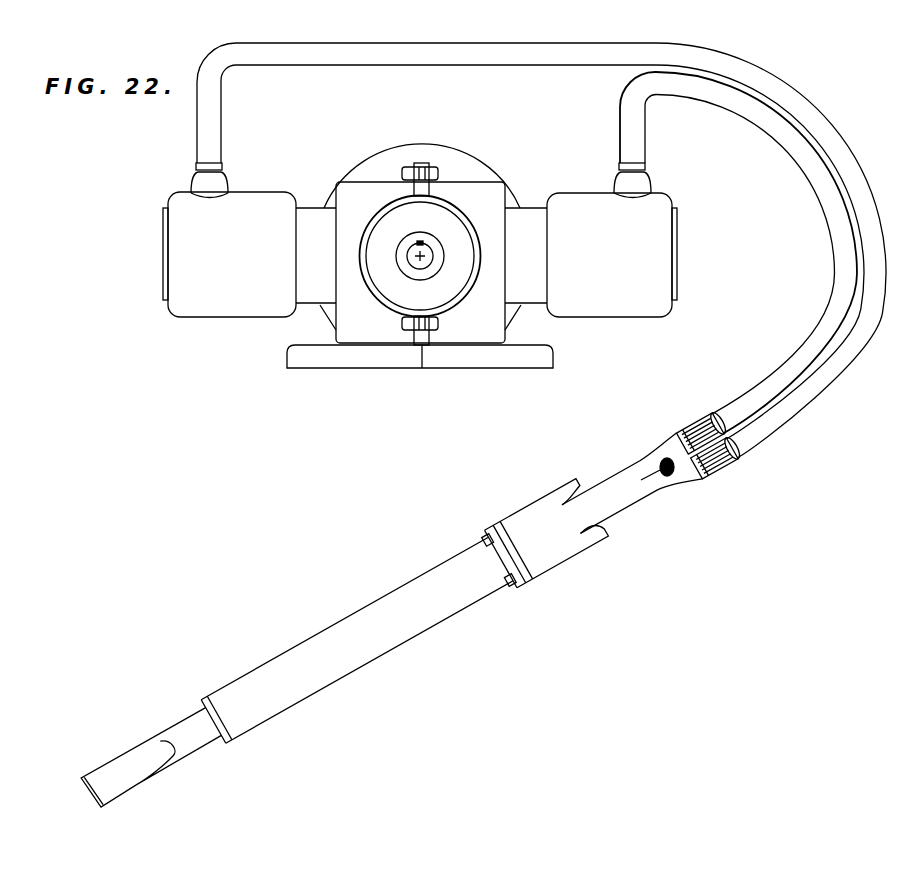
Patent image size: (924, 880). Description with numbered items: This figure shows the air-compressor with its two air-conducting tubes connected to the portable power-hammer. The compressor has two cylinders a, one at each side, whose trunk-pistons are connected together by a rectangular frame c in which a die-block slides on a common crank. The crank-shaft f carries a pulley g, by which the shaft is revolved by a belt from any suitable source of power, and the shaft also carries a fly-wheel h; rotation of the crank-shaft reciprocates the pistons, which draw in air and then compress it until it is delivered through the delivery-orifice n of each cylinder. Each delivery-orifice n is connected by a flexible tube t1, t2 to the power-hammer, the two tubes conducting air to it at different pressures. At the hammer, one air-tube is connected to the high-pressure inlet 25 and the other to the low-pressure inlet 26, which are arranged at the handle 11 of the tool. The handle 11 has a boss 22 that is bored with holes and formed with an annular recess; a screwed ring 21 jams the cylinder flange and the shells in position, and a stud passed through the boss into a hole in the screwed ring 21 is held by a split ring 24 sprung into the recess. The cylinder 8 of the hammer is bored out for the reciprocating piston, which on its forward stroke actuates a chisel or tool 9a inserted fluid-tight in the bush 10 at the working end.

The flexible tube t1 is at (381, 59).
The flexible tube t2 is at (750, 108).
The fly-wheel h is at (422, 166).
The rectangular frame c is at (420, 265).
The cylinder a is at (420, 261).
The delivery-orifice n is at (421, 180).
The crank-shaft f is at (414, 257).
The pulley g is at (479, 273).
The low-pressure inlet 26 is at (704, 424).
The high-pressure inlet 25 is at (723, 466).
The handle 11 is at (604, 494).
The boss 22 is at (547, 533).
The screwed ring 21 is at (514, 590).
The split ring 24 is at (530, 587).
The cylinder 8 is at (382, 652).
The chisel or tool 9a is at (148, 748).
The bush 10 is at (219, 743).